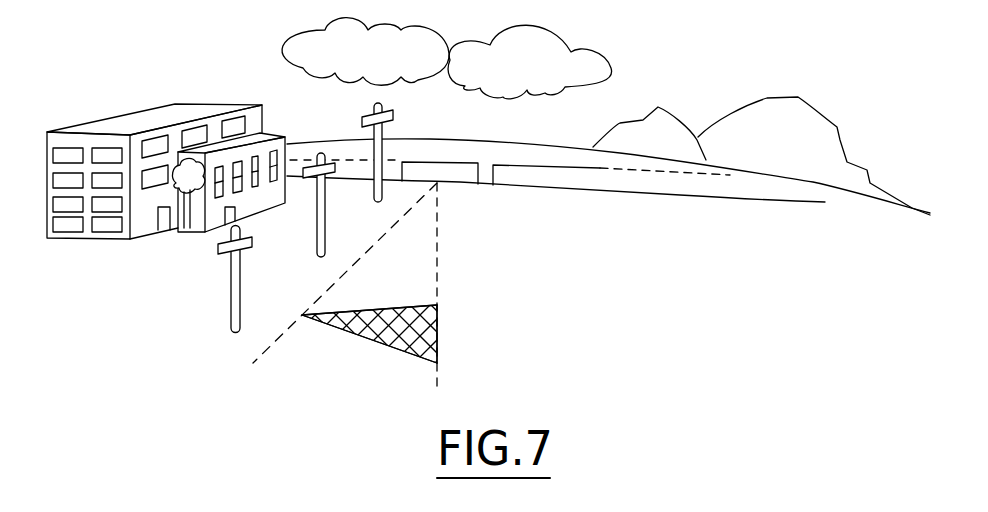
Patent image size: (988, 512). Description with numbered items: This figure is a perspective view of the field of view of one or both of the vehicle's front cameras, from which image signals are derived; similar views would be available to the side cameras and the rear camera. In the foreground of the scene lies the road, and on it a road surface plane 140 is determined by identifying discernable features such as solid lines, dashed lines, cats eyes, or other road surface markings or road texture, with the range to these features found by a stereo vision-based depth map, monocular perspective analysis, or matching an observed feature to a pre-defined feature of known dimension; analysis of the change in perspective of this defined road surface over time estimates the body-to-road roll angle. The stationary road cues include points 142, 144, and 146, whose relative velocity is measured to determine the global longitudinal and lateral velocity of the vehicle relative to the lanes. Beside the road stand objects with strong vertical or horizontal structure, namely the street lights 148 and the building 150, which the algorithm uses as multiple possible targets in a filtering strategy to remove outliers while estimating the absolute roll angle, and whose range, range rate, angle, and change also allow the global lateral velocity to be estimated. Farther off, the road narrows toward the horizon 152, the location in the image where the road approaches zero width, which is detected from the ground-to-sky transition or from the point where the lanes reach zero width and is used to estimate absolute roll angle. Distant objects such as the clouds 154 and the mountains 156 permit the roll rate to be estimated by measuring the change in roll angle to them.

The road surface plane 140 is at (383, 348).
The point 142 is at (437, 363).
The point 144 is at (437, 305).
The point 146 is at (302, 315).
The street light 148 is at (232, 266).
The building 150 is at (178, 106).
The horizon 152 is at (437, 185).
The clouds 154 is at (607, 56).
The mountains 156 is at (800, 98).